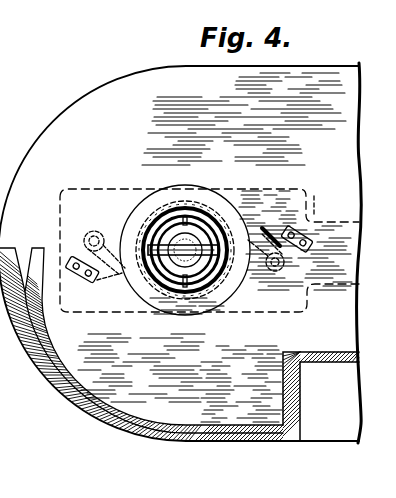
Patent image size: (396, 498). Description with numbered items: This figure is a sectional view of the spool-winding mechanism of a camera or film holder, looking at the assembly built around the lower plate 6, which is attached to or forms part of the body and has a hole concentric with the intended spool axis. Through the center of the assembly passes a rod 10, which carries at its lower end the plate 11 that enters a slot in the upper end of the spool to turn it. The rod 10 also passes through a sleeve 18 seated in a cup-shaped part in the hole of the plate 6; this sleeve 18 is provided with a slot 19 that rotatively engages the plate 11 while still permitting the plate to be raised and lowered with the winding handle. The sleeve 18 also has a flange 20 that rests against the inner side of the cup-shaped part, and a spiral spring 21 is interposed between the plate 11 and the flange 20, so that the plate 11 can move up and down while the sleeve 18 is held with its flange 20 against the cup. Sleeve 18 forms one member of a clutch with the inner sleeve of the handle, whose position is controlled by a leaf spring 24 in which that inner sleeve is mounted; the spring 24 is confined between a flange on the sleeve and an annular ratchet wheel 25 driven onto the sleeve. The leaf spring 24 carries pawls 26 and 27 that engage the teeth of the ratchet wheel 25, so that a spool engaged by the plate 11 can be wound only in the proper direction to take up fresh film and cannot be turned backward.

The plate 6 is at (122, 85).
The rod 10 is at (208, 203).
The plate 11 is at (240, 232).
The sleeve 18 is at (177, 232).
The slot 19 is at (157, 213).
The flange 20 is at (160, 288).
The spiral spring 21 is at (207, 222).
The leaf spring 24 is at (334, 284).
The annular ratchet wheel 25 is at (216, 300).
The pawl 26 is at (108, 236).
The pawl 27 is at (256, 232).